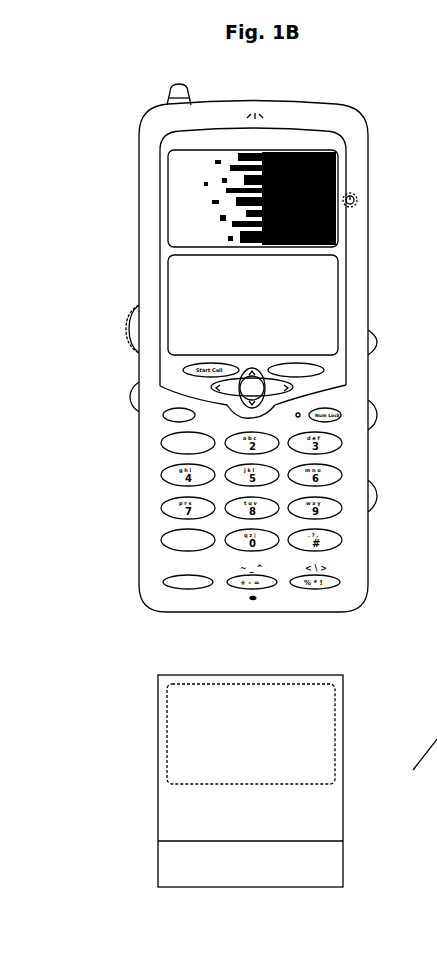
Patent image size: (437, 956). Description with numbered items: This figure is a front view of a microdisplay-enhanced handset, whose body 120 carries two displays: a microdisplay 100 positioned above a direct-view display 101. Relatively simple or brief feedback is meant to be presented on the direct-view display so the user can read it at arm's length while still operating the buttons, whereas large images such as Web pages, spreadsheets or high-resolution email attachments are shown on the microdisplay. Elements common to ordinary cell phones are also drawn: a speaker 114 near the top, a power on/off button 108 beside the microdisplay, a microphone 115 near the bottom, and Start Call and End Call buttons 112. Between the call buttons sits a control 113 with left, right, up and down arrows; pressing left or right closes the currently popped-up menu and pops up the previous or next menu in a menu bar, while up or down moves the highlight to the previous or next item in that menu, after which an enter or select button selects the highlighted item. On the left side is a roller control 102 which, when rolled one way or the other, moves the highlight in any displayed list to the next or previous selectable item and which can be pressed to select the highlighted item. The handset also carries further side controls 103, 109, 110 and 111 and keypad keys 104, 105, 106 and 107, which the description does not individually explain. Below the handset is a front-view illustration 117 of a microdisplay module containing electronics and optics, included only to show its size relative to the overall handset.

The microdisplay 100 is at (168, 191).
The direct-view display 101 is at (168, 279).
The roller control 102 is at (128, 327).
The functions button 103 is at (130, 398).
The clear key 104 is at (164, 417).
The alphanumeric keypad key 105 is at (163, 444).
The space key 106 is at (163, 540).
The punctuation key 107 is at (163, 583).
The power on/off button 108 is at (368, 200).
The shift button 109 is at (377, 337).
The 2nd letter button 110 is at (377, 416).
The 3rd letter button 111 is at (377, 497).
The Start Call and End Call buttons 112 is at (324, 370).
The control 113 is at (290, 391).
The speaker 114 is at (278, 120).
The microphone 115 is at (256, 600).
The front-view illustration of microdisplay module 117 is at (343, 720).
The handset housing 120 is at (363, 127).